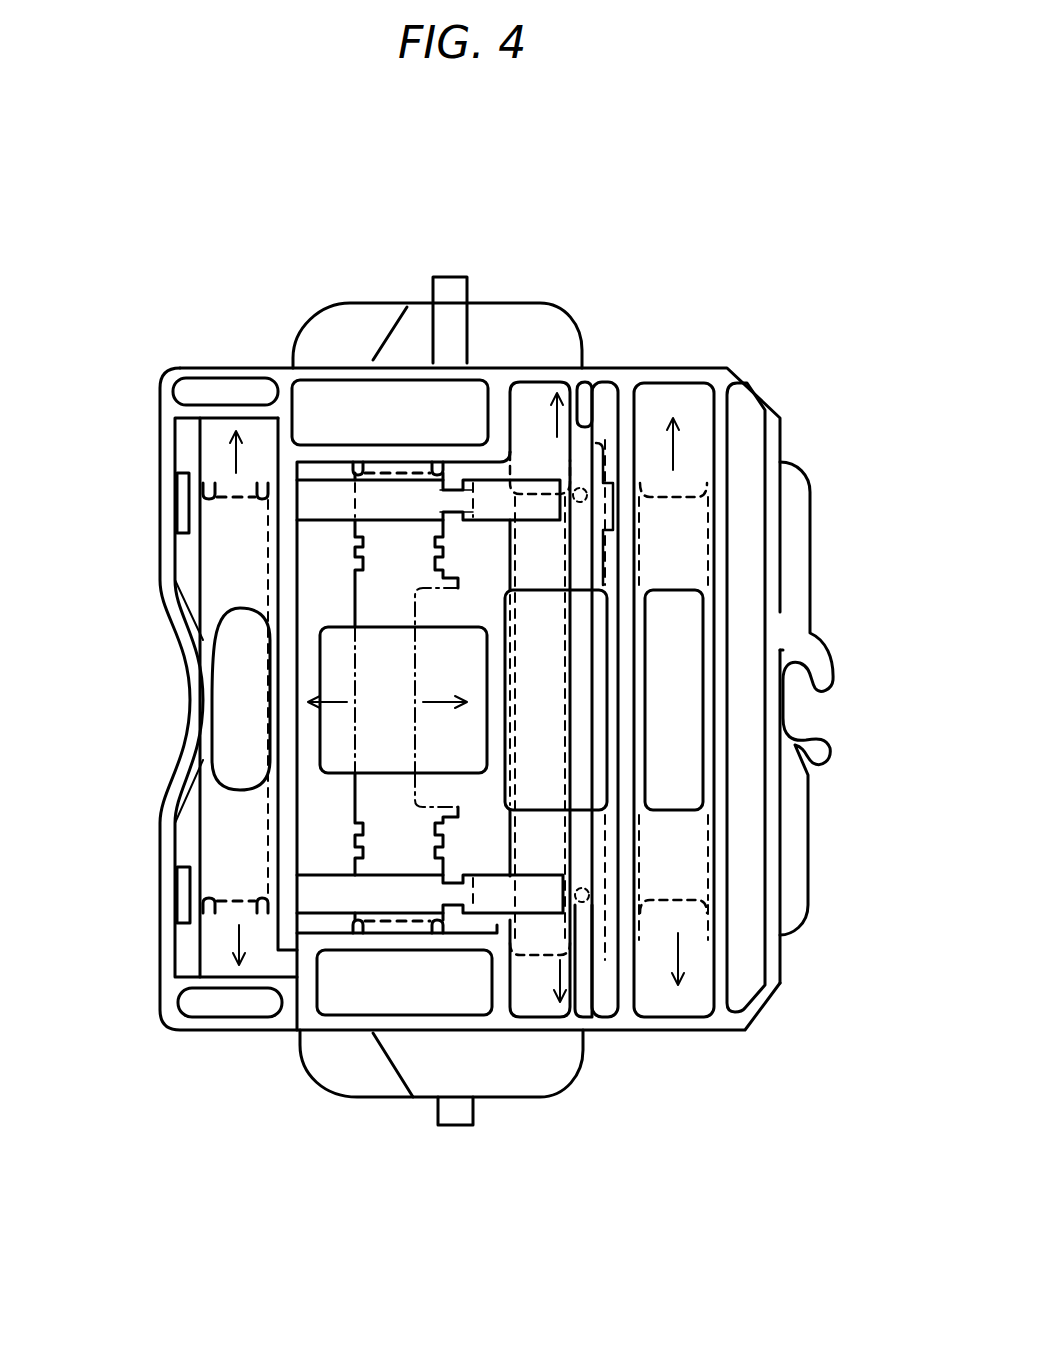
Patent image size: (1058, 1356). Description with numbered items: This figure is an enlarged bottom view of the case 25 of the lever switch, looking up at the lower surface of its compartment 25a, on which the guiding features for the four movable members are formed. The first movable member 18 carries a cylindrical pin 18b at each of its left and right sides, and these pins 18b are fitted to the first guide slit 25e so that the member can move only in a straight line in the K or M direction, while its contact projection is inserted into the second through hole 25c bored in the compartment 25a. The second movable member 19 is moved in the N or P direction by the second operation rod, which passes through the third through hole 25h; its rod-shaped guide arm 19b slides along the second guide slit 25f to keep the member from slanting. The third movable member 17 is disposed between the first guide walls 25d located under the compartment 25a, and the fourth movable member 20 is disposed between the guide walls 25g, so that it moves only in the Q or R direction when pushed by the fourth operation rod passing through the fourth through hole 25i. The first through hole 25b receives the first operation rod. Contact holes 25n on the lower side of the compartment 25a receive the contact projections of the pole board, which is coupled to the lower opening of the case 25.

The third movable member 17 is at (683, 905).
The first movable member 18 is at (560, 947).
The pin 18b is at (590, 903).
The second movable member 19 is at (413, 927).
The guide arm 19b is at (475, 940).
The fourth movable member 20 is at (230, 902).
The case 25 is at (300, 1083).
The compartment 25a is at (530, 562).
The first through hole 25b is at (700, 617).
The second through hole 25c is at (588, 680).
The first guide wall 25d is at (655, 836).
The first guide slit 25e is at (590, 428).
The second guide slit 25f is at (513, 487).
The guide wall 25g is at (200, 840).
The third through hole 25h is at (385, 633).
The fourth through hole 25i is at (210, 664).
The contact hole 25n is at (397, 378).